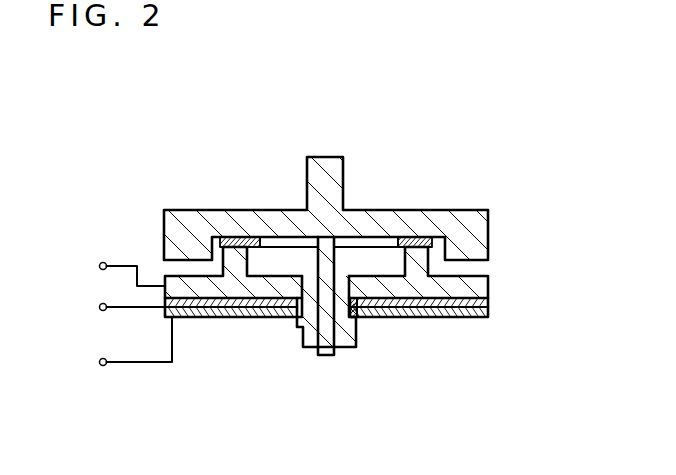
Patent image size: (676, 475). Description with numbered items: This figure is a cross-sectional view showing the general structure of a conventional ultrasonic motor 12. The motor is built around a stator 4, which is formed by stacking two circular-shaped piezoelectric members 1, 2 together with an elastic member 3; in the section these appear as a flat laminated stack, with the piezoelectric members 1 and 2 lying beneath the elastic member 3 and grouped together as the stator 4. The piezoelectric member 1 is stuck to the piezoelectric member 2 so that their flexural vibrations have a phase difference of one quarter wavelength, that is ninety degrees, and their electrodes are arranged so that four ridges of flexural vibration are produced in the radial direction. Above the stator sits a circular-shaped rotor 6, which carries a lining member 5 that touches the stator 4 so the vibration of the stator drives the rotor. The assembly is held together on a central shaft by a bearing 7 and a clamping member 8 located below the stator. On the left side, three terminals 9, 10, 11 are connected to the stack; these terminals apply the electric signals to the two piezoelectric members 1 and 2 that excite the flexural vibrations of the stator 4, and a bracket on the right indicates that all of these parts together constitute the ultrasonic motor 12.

The piezoelectric member 1 is at (488, 300).
The piezoelectric member 2 is at (488, 312).
The elastic member 3 is at (488, 280).
The stator 4 is at (558, 253).
The lining member 5 is at (447, 247).
The rotor 6 is at (486, 222).
The bearing 7 is at (357, 322).
The clamping member 8 is at (360, 327).
The terminal 9 is at (99, 265).
The terminal 10 is at (99, 307).
The terminal 11 is at (99, 363).
The ultrasonic motor 12 is at (605, 418).